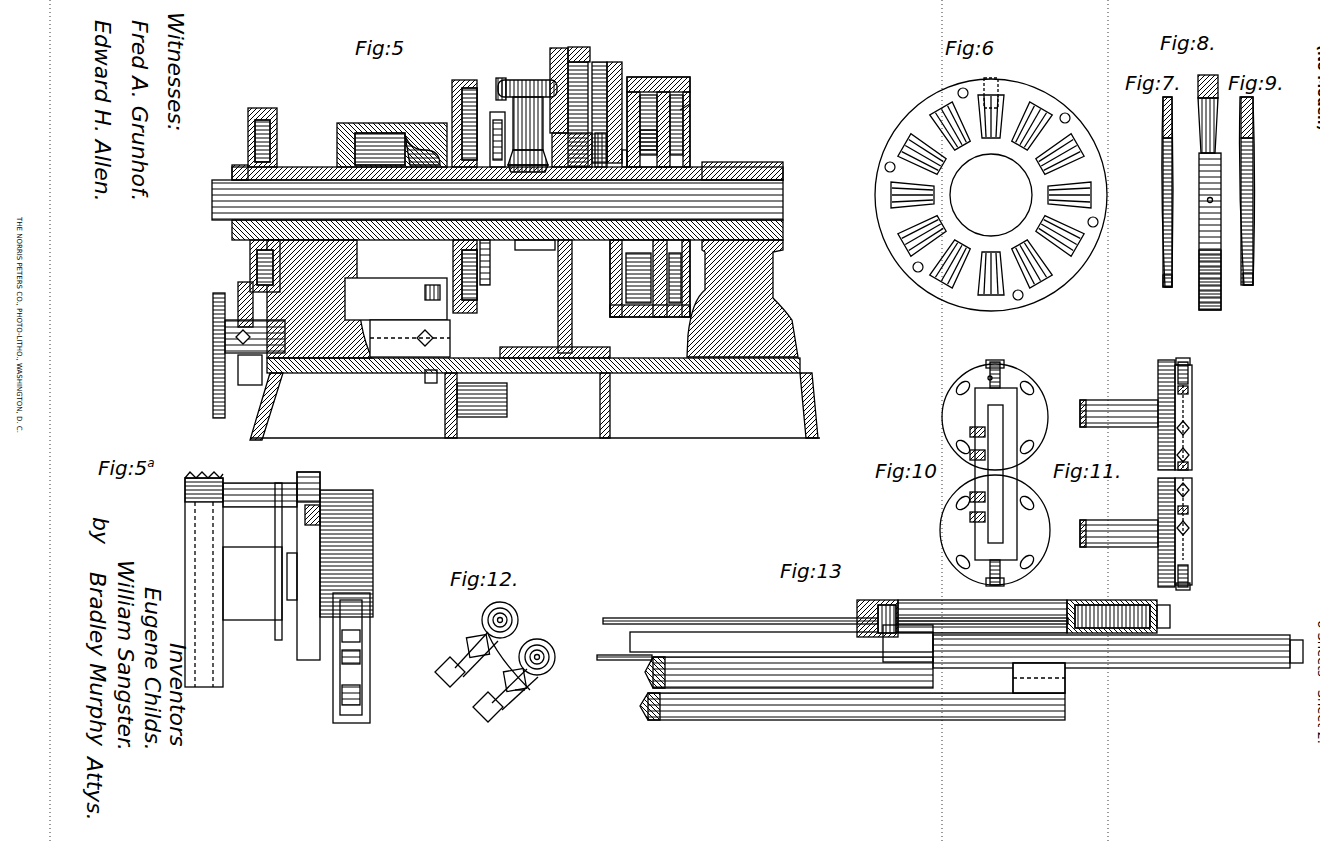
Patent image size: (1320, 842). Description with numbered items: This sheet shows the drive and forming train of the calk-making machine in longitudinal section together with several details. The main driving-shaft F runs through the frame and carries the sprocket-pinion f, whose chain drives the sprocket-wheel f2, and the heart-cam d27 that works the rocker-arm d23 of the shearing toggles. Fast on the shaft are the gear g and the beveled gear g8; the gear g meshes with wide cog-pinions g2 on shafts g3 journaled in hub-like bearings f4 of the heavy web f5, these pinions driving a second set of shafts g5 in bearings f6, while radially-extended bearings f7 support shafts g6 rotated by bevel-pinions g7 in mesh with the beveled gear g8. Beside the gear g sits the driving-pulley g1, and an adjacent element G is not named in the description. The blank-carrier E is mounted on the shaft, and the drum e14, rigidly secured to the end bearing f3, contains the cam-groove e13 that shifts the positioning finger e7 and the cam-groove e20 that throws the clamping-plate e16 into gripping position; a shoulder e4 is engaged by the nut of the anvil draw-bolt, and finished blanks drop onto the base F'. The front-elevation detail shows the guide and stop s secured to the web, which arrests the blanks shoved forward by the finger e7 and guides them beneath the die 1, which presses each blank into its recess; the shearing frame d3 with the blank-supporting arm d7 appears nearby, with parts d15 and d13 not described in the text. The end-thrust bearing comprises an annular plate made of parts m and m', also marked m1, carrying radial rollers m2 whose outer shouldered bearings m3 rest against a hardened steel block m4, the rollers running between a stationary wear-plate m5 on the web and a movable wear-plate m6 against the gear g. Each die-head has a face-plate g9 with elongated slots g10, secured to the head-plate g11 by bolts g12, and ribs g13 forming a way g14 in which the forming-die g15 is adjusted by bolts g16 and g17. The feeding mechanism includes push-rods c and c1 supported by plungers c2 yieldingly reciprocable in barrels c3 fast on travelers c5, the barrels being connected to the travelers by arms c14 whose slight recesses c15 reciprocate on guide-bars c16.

In FIG. 5, the main driving-shaft F is at (498, 303).
In FIG. 5, the base F' is at (756, 181).
In FIG. 5, the sprocket-pinion f is at (212, 178).
In FIG. 5, the heart-cam d27 is at (250, 135).
In FIG. 5, the drum e14 is at (375, 123).
In FIG. 5A, the drum e14 is at (373, 525).
In FIG. 5, the cam-groove e13 is at (412, 130).
In FIG. 5, the bevel-pinions g7 is at (456, 96).
In FIG. 5, the radially-extended bearings f7 is at (497, 105).
In FIG. 5, the hub-like bearings f4 is at (524, 78).
In FIG. 5, the gear hub G is at (560, 50).
In FIG. 5, the web or bridge-piece f5 is at (590, 60).
In FIG. 5A, the web or bridge-piece f5 is at (190, 543).
In FIG. 5, the cog-pinions g2 is at (617, 64).
In FIG. 5, the driving-pulley g1 is at (672, 80).
In FIG. 5, the gear g is at (694, 103).
In FIG. 5, the radial rollers m2 is at (655, 140).
In FIG. 8, the radial rollers m2 is at (1207, 135).
In FIG. 5, the bearings f6 is at (625, 160).
In FIG. 5, the shafts g6 is at (528, 170).
In FIG. 5, the sprocket-wheel f2 is at (213, 352).
In FIG. 5, the end bearing f3 is at (340, 290).
In FIG. 5, the cam-groove e20 is at (492, 262).
In FIG. 5, the beveled gear g8 is at (520, 250).
In FIG. 5, the rocker-arm d23 is at (428, 384).
In FIG. 6, the annular plate part m is at (1004, 195).
In FIG. 8, the annular plate part m is at (1221, 242).
In FIG. 9, the annular plate part m is at (1247, 288).
In FIG. 6, the annular plate part m' is at (974, 195).
In FIG. 6, the shouldered bearing m3 is at (1003, 100).
In FIG. 7, the stationary wear-plate m5 is at (1163, 120).
In FIG. 7, the annular plate part m1 is at (1198, 300).
In FIG. 8, the hardened steel block m4 is at (1210, 98).
In FIG. 9, the movable wear-plate m6 is at (1254, 125).
In FIG. 10, the face-plate g9 is at (944, 396).
In FIG. 11, the face-plate g9 is at (1193, 398).
In FIG. 10, the ribs g13 is at (1010, 425).
In FIG. 11, the ribs g13 is at (1190, 450).
In FIG. 10, the way g14 is at (1040, 385).
In FIG. 10, the bolts g16 is at (1001, 365).
In FIG. 11, the bolts g16 is at (1190, 368).
In FIG. 10, the elongated slots g10 is at (968, 385).
In FIG. 10, the bolts g12 is at (1030, 384).
In FIG. 11, the bolts g12 is at (1190, 388).
In FIG. 10, the bolts g17 is at (970, 431).
In FIG. 11, the bolts g17 is at (1190, 428).
In FIG. 10, the forming-die g15 is at (988, 455).
In FIG. 11, the forming-die g15 is at (1190, 465).
In FIG. 11, the shafts g3 is at (1115, 400).
In FIG. 11, the shafts g5 is at (1118, 520).
In FIG. 11, the head-plate g11 is at (1166, 362).
In FIG. 5A, the die 1 is at (275, 483).
In FIG. 5A, the guide and stop s is at (275, 586).
In FIG. 5A, the blank-carrier E is at (308, 482).
In FIG. 5A, the clamping-plate e16 is at (328, 505).
In FIG. 5A, the finger e7 is at (345, 518).
In FIG. 5A, the shoulder e4 is at (340, 548).
In FIG. 5A, the plate or frame d3 is at (370, 600).
In FIG. 5A, the pawl d15 is at (365, 622).
In FIG. 5A, the lever d13 is at (362, 642).
In FIG. 5A, the arm d7 is at (356, 705).
In FIG. 12, the barrels c3 is at (506, 604).
In FIG. 13, the barrels c3 is at (938, 606).
In FIG. 12, the guide-bars c16 is at (468, 636).
In FIG. 13, the guide-bars c16 is at (735, 640).
In FIG. 12, the arms c14 is at (462, 660).
In FIG. 12, the travelers c5 is at (438, 672).
In FIG. 13, the travelers c5 is at (835, 665).
In FIG. 12, the recesses c15 is at (520, 692).
In FIG. 13, the push-rod c1 is at (707, 618).
In FIG. 13, the push-rod c is at (612, 655).
In FIG. 13, the plungers c2 is at (858, 612).